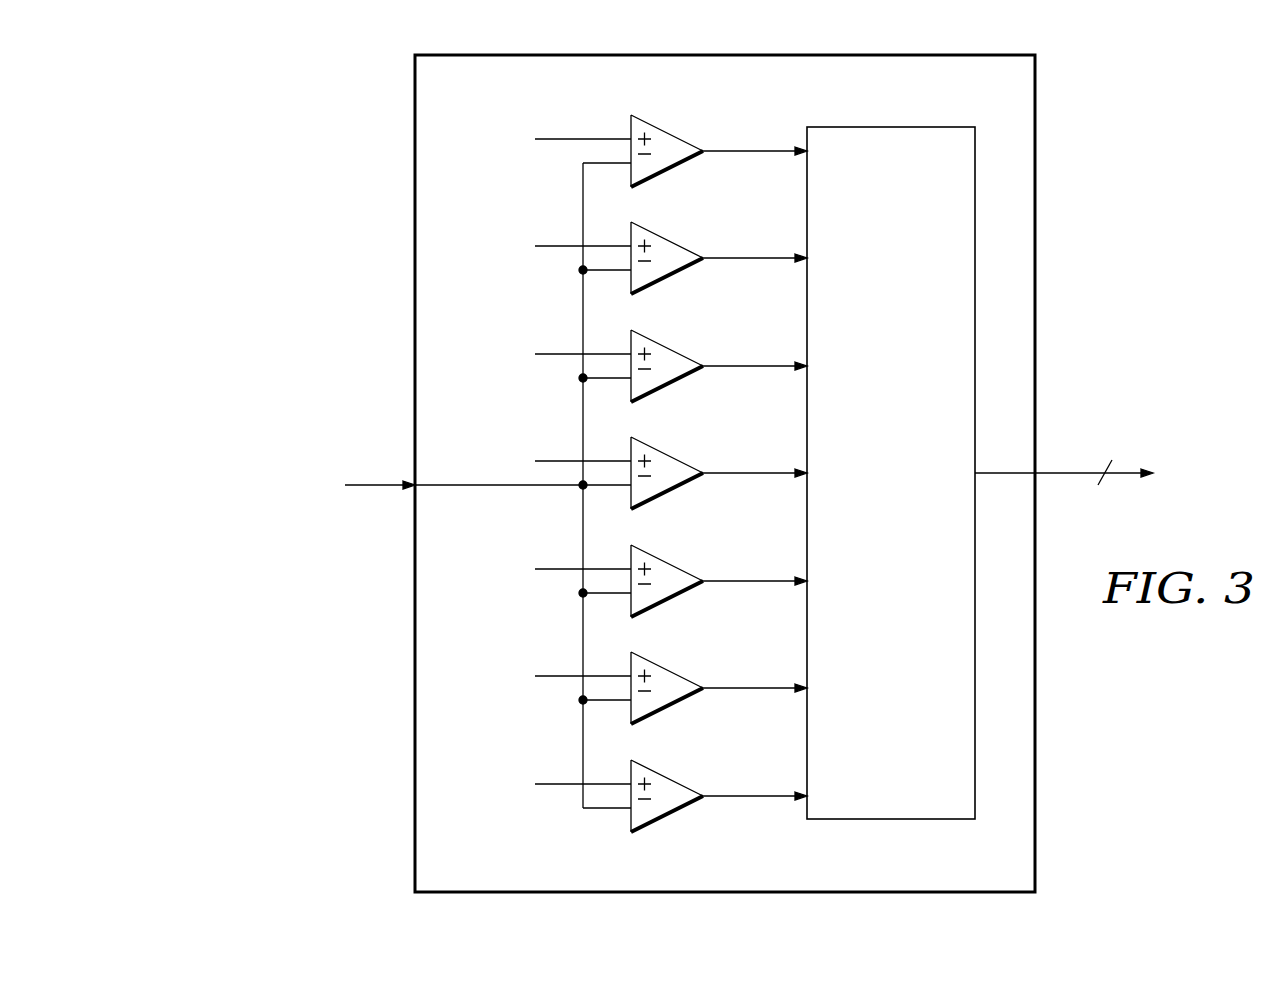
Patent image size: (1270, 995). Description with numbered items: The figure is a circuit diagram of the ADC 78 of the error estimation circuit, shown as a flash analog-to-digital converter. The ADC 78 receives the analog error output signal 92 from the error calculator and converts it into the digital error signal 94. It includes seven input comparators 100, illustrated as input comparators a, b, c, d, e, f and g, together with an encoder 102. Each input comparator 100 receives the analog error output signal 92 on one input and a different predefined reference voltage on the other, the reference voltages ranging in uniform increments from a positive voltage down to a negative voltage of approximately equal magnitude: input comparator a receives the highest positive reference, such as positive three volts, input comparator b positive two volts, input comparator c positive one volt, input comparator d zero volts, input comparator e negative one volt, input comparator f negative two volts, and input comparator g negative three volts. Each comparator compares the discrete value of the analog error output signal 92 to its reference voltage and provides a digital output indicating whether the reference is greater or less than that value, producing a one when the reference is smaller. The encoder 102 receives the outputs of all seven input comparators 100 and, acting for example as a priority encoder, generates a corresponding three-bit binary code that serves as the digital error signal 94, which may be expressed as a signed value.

The ADC 78 is at (628, 474).
The analog error output signal 92 is at (377, 483).
The digital error signal 94 is at (997, 473).
The input comparators 100 is at (628, 804).
The encoder 102 is at (913, 491).
The input comparator 100a a is at (657, 125).
The input comparator 100b b is at (667, 237).
The input comparator 100c c is at (667, 345).
The input comparator 100d d is at (667, 452).
The input comparator 100e e is at (667, 560).
The input comparator 100f f is at (667, 667).
The input comparator 100g g is at (667, 775).